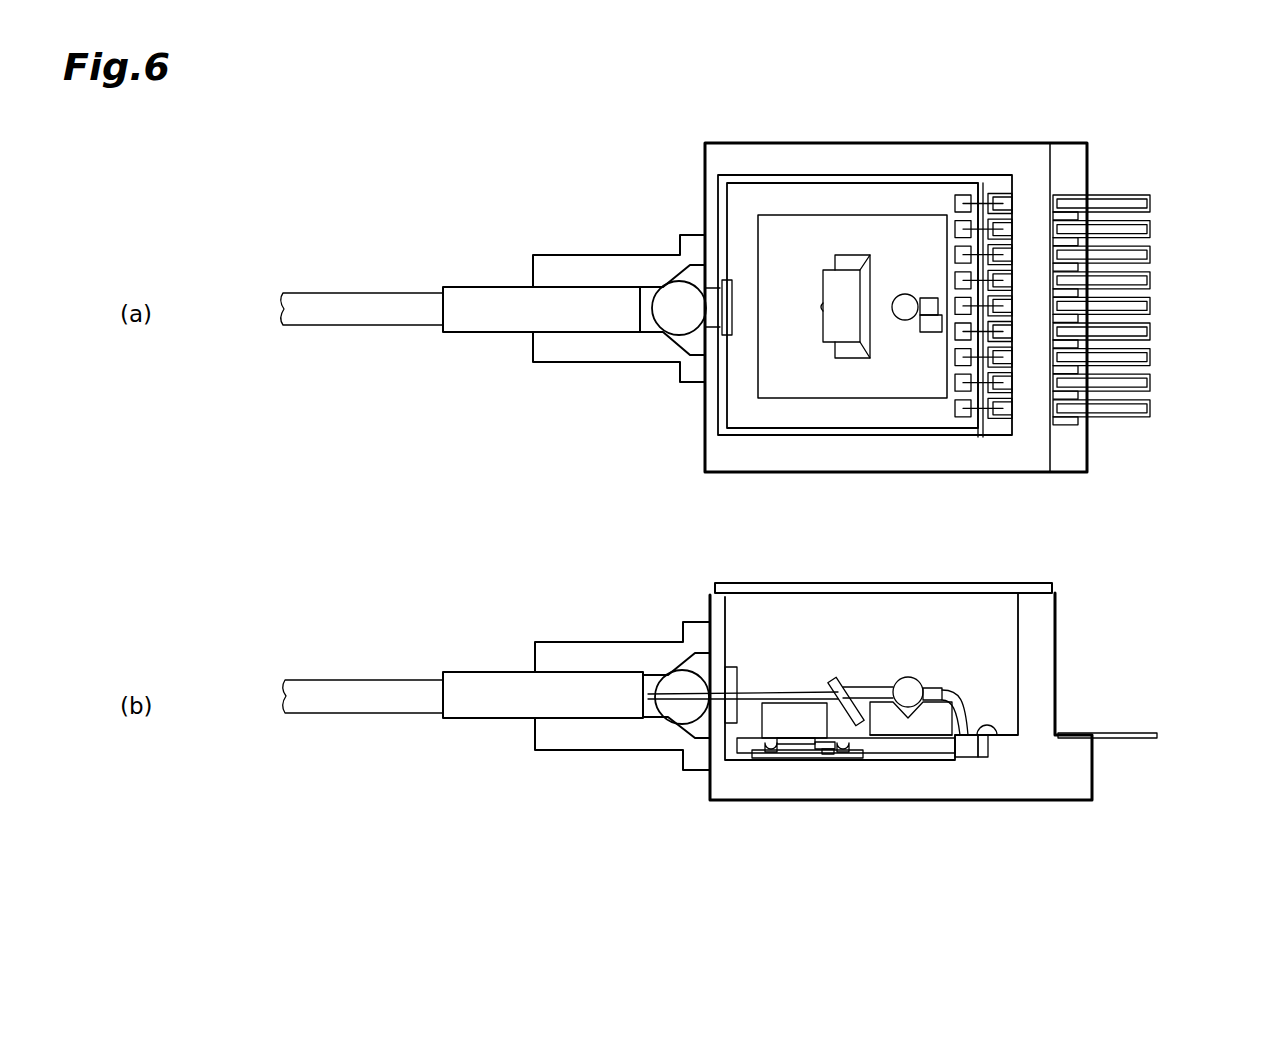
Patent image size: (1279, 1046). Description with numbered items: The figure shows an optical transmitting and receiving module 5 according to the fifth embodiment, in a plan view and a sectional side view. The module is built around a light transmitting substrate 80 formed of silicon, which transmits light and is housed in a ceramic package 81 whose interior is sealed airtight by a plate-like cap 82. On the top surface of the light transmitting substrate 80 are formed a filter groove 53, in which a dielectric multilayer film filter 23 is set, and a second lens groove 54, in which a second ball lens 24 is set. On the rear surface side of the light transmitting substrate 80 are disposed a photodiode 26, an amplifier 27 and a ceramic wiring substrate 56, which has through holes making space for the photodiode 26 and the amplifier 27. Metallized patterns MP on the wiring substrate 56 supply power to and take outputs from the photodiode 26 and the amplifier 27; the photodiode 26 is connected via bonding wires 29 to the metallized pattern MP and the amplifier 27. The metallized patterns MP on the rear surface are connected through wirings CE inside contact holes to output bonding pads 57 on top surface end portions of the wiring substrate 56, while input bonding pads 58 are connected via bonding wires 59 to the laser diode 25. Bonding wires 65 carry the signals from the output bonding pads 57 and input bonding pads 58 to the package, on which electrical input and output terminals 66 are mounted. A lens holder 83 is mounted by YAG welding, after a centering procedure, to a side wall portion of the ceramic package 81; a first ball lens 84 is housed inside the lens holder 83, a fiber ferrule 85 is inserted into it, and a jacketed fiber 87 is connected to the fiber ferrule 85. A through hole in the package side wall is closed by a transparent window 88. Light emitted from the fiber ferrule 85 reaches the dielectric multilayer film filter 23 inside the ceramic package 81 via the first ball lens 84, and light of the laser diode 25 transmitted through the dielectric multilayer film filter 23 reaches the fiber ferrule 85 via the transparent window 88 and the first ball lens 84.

The optical transmitting and receiving module 5 is at (1158, 167).
The dielectric multilayer film filter 23 is at (838, 318).
The second ball lens 24 is at (907, 321).
The laser diode 25 is at (930, 298).
The photodiode 26 is at (830, 752).
The amplifier 27 is at (792, 745).
The bonding wires 29 is at (813, 755).
The filter groove 53 is at (850, 353).
The second lens groove 54 is at (905, 730).
The wiring substrate 56 is at (893, 395).
The output bonding pads 57 is at (956, 195).
The input bonding pads 58 is at (968, 326).
The bonding wires 59 is at (955, 697).
The bonding wires 65 is at (988, 190).
The electrical input and output terminals 66 is at (1145, 282).
The light transmitting substrate 80 is at (765, 718).
The ceramic package 81 is at (838, 470).
The plate-like cap 82 is at (893, 588).
The lens holder 83 is at (590, 265).
The first ball lens 84 is at (672, 318).
The fiber ferrule 85 is at (488, 300).
The jacketed fiber 87 is at (356, 300).
The transparent window 88 is at (725, 330).
The metallized patterns MP is at (768, 748).
The wirings CE is at (957, 750).